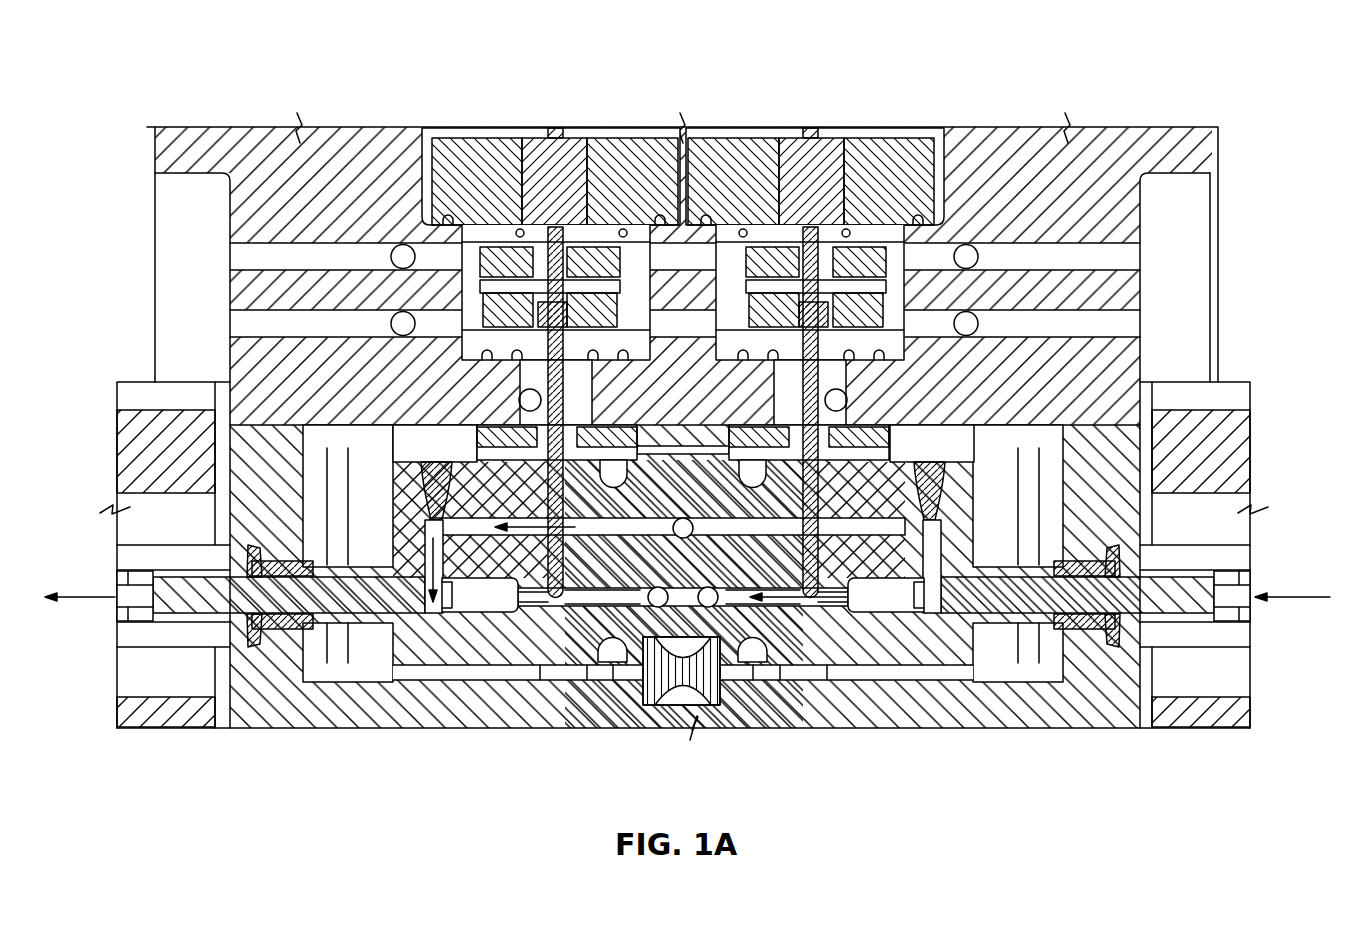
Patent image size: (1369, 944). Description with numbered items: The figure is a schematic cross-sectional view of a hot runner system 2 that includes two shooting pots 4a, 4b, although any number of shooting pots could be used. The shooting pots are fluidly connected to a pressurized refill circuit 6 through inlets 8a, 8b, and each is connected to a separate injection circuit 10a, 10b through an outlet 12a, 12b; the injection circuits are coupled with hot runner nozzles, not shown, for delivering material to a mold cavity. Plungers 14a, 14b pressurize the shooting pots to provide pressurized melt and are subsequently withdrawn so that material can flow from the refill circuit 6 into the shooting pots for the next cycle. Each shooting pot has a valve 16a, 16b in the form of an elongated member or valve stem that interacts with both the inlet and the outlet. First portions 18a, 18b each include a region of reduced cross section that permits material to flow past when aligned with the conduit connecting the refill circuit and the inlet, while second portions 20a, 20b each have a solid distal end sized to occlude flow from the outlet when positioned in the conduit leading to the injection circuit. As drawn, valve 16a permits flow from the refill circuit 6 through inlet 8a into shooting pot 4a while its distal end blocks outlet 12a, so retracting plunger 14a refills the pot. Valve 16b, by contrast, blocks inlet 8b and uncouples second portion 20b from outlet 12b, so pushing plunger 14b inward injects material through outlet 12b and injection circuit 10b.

The hot runner system 2 is at (194, 109).
The shooting pot 4a is at (495, 602).
The shooting pot 4b is at (890, 602).
The refill circuit 6 is at (684, 540).
The inlet 8a is at (462, 603).
The inlet 8b is at (923, 603).
The injection circuit 10a is at (655, 607).
The injection circuit 10b is at (710, 607).
The outlet 12a is at (556, 600).
The outlet 12b is at (845, 600).
The plunger 14a is at (292, 600).
The plunger 14b is at (1080, 617).
The valve 16a is at (553, 318).
The valve 16b is at (812, 300).
The first portion 18a is at (555, 523).
The first portion 18b is at (815, 512).
The second portion 20a is at (588, 600).
The second portion 20b is at (793, 600).